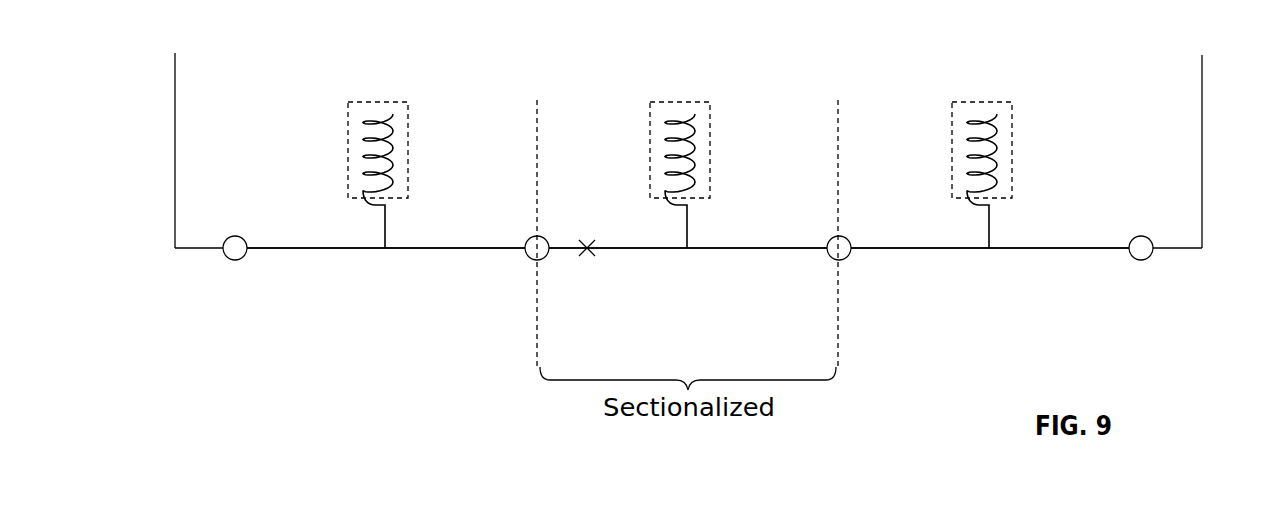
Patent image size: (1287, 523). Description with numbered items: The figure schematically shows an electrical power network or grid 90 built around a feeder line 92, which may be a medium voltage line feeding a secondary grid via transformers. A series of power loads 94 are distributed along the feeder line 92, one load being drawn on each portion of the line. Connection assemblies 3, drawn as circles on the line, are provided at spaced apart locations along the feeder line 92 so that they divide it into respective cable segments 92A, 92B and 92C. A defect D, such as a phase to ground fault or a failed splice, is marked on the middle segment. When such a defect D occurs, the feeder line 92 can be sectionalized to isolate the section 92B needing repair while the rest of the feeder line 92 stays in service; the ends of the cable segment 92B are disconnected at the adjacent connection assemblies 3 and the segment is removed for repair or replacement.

The electrical power network 90 is at (151, 38).
The feeder line 92 is at (1203, 153).
The cable segment 92A is at (315, 248).
The cable segment 92B is at (752, 248).
The cable segment 92C is at (1058, 248).
The connection assembly 3 is at (234, 260).
The defect D is at (588, 259).
The power load 94 is at (393, 131).